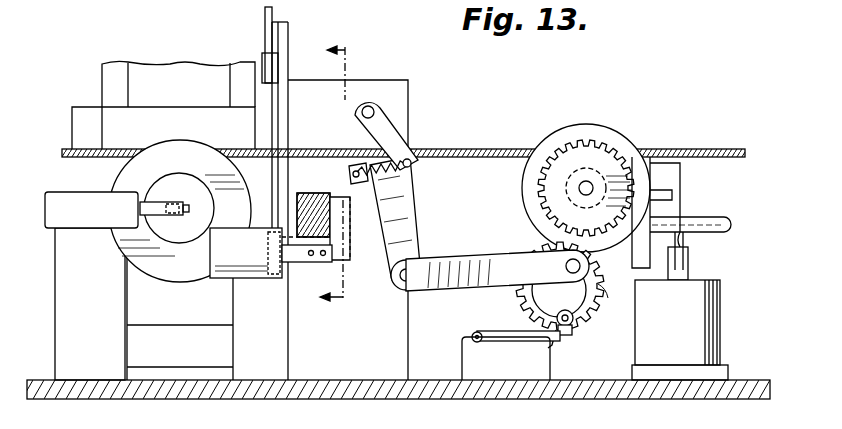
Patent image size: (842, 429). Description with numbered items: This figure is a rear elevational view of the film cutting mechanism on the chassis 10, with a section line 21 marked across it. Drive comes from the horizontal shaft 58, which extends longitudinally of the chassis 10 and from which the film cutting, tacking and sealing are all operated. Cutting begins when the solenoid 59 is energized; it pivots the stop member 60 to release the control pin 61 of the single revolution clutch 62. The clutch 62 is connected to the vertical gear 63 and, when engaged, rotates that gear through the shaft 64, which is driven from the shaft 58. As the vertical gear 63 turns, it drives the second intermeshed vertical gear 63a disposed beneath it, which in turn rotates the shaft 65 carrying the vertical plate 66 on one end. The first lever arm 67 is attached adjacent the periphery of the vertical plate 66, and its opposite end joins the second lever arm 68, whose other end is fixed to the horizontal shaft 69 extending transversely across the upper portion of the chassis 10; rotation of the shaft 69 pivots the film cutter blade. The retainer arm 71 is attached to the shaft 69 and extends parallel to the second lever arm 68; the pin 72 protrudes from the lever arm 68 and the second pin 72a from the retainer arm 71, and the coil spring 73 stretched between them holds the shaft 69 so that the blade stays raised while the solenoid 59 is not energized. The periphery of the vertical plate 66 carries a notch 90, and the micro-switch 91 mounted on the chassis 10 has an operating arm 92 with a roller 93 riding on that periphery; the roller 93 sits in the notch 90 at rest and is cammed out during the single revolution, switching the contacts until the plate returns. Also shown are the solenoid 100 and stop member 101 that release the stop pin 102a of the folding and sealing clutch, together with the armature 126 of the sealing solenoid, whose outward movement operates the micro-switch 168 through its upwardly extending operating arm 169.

The chassis 10 is at (760, 386).
The section line 21 is at (352, 175).
The horizontal shaft 58 is at (723, 236).
The solenoid 59 is at (705, 312).
The stop member 60 is at (685, 210).
The control pin 61 is at (660, 191).
The single revolution clutch 62 is at (605, 135).
The vertical gear 63 is at (553, 142).
The second vertical gear 63a is at (502, 250).
The shaft 64 is at (588, 197).
The shaft 65 is at (523, 306).
The vertical plate 66 is at (596, 322).
The first lever arm 67 is at (437, 282).
The second lever arm 68 is at (412, 200).
The horizontal shaft 69 is at (380, 112).
The retainer arm 71 is at (397, 143).
The pin 72 is at (415, 167).
The second pin 72a is at (352, 160).
The coil spring 73 is at (345, 241).
The notch 90 is at (603, 291).
The micro-switch 91 is at (506, 358).
The operating arm 92 is at (556, 330).
The roller 93 is at (576, 326).
The solenoid 100 is at (217, 280).
The stop member 101 is at (337, 263).
The stop pin 102a is at (268, 243).
The armature 126 is at (207, 202).
The micro-switch 168 is at (91, 229).
The operating arm 169 is at (162, 197).